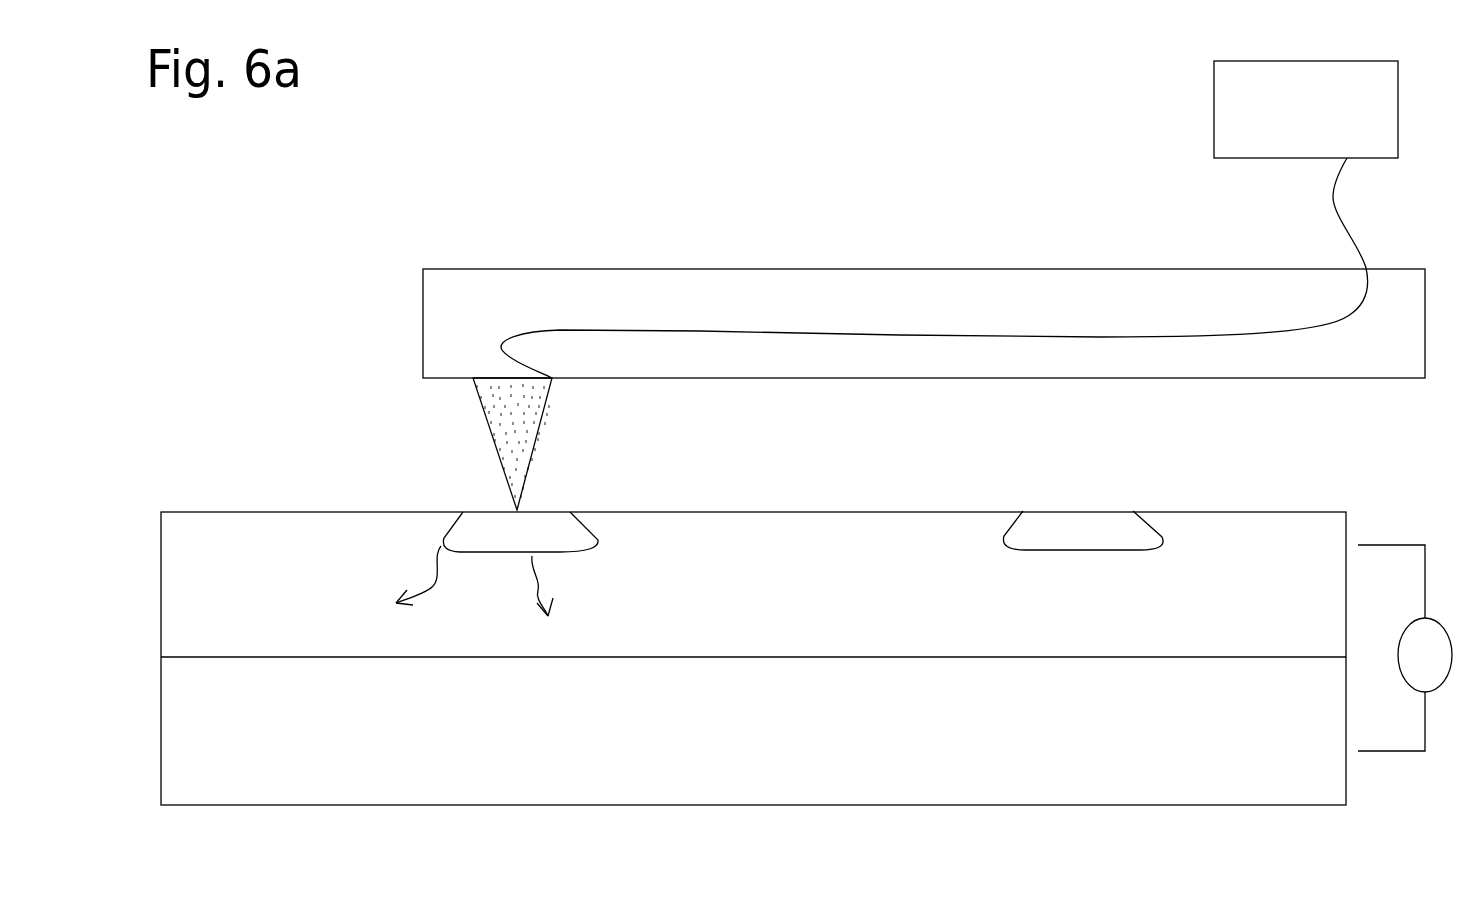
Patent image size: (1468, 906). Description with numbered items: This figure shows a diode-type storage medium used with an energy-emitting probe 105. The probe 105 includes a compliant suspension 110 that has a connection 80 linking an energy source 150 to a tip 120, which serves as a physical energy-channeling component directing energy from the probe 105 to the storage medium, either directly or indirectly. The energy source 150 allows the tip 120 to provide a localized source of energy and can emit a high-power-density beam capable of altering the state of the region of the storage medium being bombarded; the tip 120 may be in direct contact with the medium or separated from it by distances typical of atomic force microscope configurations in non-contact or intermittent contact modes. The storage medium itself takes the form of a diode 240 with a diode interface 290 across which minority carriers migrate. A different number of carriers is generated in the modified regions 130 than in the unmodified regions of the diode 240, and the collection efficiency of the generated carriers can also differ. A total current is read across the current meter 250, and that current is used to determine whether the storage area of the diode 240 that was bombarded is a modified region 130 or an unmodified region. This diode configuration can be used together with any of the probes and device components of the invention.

The energy-emitting probe 105 is at (383, 294).
The compliant suspension 110 is at (542, 292).
The tip 120 is at (543, 415).
The connection 80 is at (898, 328).
The energy source 150 is at (1306, 109).
The diode 240 is at (267, 477).
The diode interface 290 is at (792, 657).
The modified region 130 is at (1082, 533).
The current meter 250 is at (1412, 653).